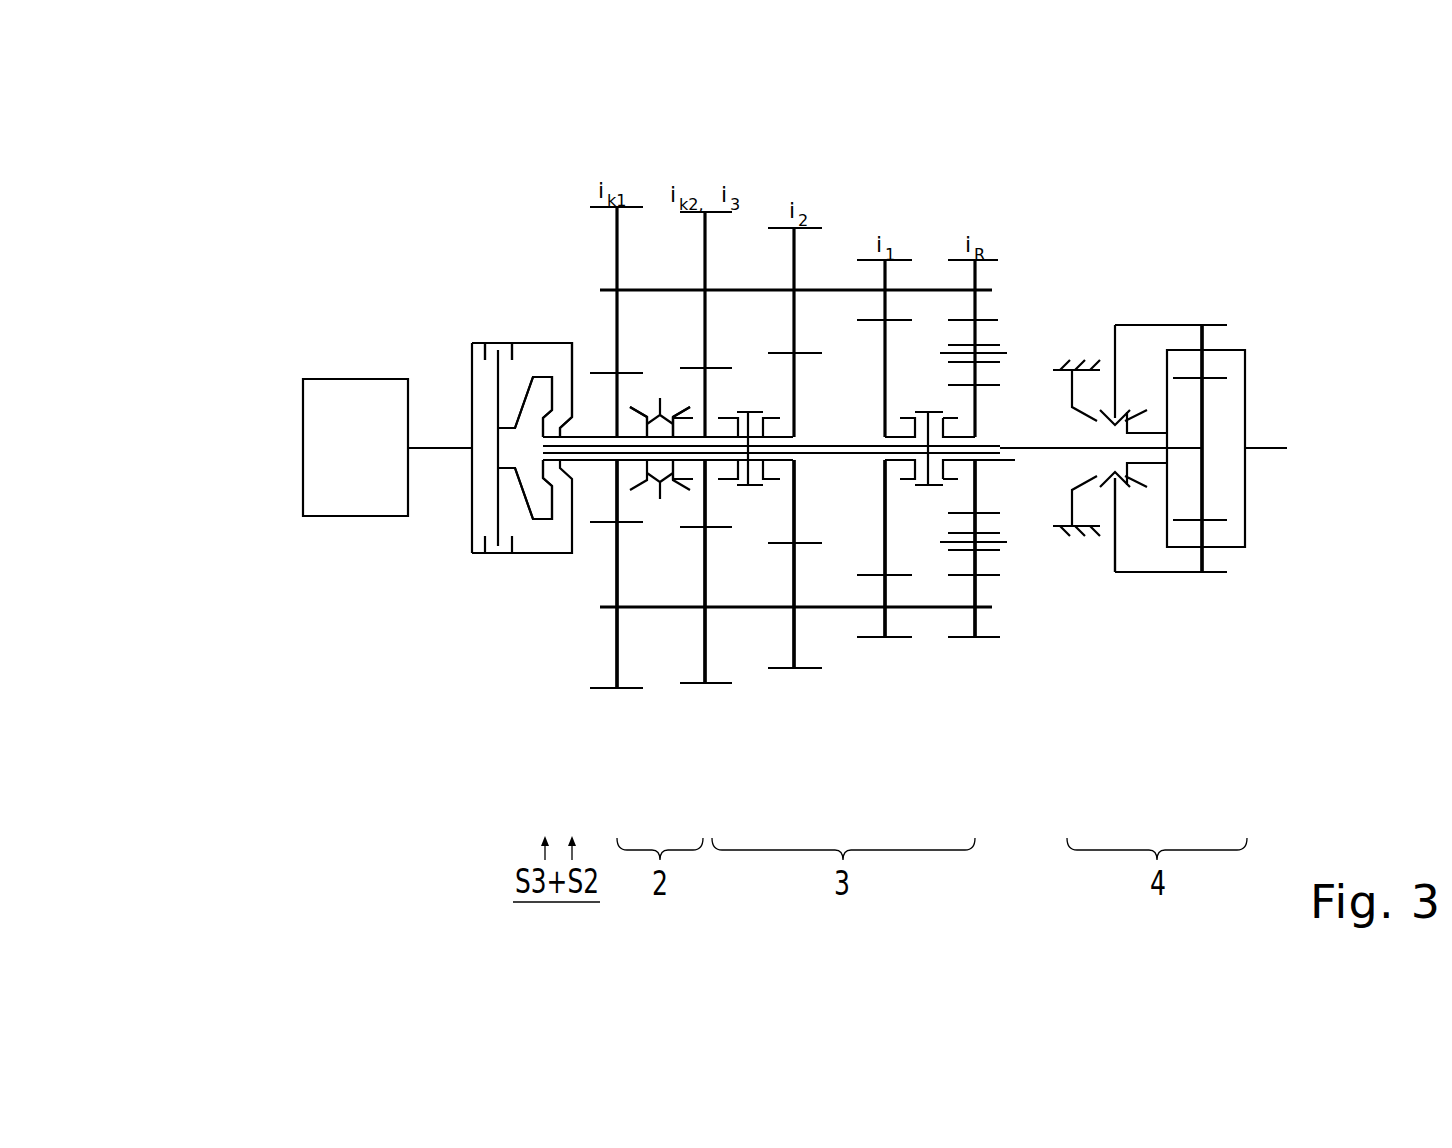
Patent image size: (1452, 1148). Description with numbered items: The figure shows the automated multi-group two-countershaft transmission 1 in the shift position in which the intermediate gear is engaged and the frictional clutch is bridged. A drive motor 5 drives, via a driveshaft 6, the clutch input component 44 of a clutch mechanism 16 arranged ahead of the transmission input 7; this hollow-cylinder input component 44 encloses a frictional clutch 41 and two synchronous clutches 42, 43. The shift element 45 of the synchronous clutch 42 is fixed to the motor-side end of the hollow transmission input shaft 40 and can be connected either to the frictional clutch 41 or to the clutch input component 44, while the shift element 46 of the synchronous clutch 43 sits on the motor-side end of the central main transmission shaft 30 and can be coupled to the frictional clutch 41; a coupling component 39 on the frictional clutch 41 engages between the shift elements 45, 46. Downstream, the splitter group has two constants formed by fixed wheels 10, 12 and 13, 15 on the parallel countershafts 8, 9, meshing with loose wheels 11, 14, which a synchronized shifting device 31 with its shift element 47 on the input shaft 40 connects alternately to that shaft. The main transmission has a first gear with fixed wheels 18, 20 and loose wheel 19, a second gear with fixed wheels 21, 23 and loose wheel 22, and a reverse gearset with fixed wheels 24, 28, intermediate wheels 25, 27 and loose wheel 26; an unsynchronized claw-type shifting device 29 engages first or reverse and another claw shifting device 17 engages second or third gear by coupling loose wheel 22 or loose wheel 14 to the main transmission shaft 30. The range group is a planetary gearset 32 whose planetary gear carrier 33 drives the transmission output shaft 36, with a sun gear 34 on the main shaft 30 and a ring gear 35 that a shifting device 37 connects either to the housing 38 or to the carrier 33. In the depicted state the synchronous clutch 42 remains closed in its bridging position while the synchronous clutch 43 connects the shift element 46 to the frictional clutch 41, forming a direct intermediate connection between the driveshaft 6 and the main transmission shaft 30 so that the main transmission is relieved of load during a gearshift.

The two-countershaft transmission 1 is at (287, 325).
The drive motor 5 is at (350, 517).
The driveshaft 6 is at (445, 451).
The transmission input 7 is at (596, 437).
The first countershaft 8 is at (601, 437).
The second countershaft 9 is at (617, 510).
The fixed wheel 10 is at (615, 255).
The loose wheel 11 is at (594, 457).
The fixed wheel 12 is at (617, 653).
The fixed wheel 13 is at (749, 398).
The loose wheel 14 is at (705, 508).
The fixed wheel 15 is at (707, 650).
The clutch mechanism 16 is at (477, 562).
The claw shifting device 17 is at (707, 262).
The fixed wheel 18 is at (886, 280).
The loose wheel 19 is at (885, 520).
The fixed wheel 20 is at (885, 622).
The fixed wheel 21 is at (800, 262).
The loose wheel 22 is at (794, 503).
The fixed wheel 23 is at (794, 635).
The fixed wheel 24 is at (977, 277).
The intermediate wheel 25 is at (977, 335).
The loose wheel 26 is at (1017, 460).
The intermediate wheel 27 is at (977, 563).
The fixed wheel 28 is at (975, 623).
The claw-type shifting device 29 is at (928, 398).
The main transmission shaft 30 is at (1112, 578).
The shifting device 31 is at (648, 397).
The planetary gearset 32 is at (1202, 560).
The planetary gear carrier 33 is at (1236, 350).
The sun gear 34 is at (1203, 417).
The ring gear 35 is at (1147, 323).
The transmission output shaft 36 is at (1270, 448).
The shifting device 37 is at (1172, 573).
The housing 38 is at (1073, 366).
The coupling component 39 is at (540, 553).
The transmission input shaft 40 is at (578, 462).
The frictional clutch 41 is at (497, 335).
The synchronous clutch 42 is at (590, 437).
The synchronous clutch 43 is at (563, 335).
The clutch input component 44 is at (520, 553).
The shift element 45 is at (585, 432).
The shift element 46 is at (535, 335).
The shift element 47 is at (660, 398).